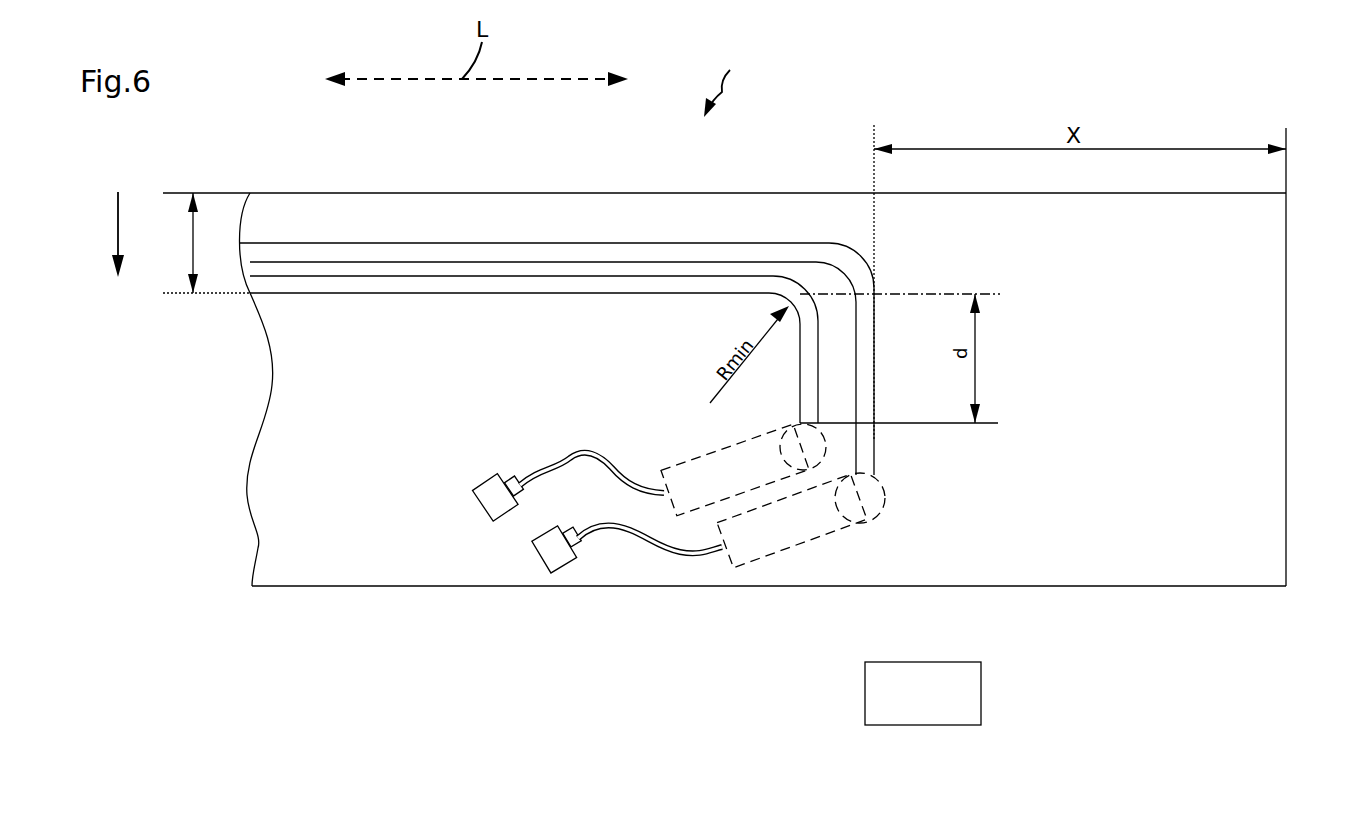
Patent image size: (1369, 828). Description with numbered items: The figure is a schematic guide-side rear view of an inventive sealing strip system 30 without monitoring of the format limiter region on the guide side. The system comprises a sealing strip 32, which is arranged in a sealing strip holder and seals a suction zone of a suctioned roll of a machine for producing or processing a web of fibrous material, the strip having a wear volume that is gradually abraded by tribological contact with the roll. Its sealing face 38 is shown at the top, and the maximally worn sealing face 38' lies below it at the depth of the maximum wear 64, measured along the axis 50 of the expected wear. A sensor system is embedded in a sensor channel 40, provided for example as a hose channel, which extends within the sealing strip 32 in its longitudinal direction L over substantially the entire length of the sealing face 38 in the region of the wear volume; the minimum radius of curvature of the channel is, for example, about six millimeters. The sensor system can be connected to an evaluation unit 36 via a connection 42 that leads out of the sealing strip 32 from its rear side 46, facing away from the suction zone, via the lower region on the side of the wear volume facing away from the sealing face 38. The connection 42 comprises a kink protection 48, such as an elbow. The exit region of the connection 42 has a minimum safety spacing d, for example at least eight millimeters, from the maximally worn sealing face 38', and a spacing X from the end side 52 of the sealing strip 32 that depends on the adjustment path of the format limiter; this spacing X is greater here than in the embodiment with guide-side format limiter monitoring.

The inventive sealing strip system 30 is at (730, 86).
The sealing strip 32 is at (280, 450).
The evaluation unit 36 is at (878, 690).
The sealing face 38 is at (724, 159).
The maximally worn sealing face 38' is at (581, 322).
The sensor channel 40 is at (342, 287).
The connection 42 is at (737, 528).
The rear side 46 is at (1105, 511).
The kink protection 48 is at (797, 546).
The axis of the expected wear 50 is at (116, 232).
The end side 52 is at (1287, 512).
The maximum wear 64 is at (192, 237).